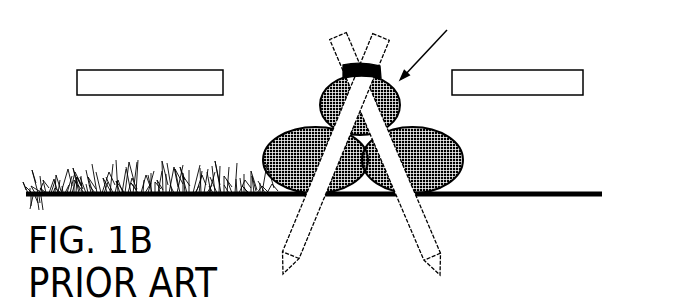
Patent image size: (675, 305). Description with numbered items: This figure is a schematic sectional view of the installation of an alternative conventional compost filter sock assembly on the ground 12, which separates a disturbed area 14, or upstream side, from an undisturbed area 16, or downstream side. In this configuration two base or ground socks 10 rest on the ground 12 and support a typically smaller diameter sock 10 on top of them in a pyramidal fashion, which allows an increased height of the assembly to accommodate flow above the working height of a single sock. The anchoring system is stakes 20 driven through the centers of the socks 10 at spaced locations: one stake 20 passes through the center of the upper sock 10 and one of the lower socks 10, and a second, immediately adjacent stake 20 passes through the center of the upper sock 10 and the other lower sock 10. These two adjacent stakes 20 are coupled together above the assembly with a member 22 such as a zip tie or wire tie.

The compost filter sock 10 is at (402, 101).
The ground 12 is at (531, 192).
The disturbed area 14 is at (584, 87).
The undisturbed area 16 is at (128, 69).
The stake 20 is at (305, 223).
The member 22 is at (336, 69).